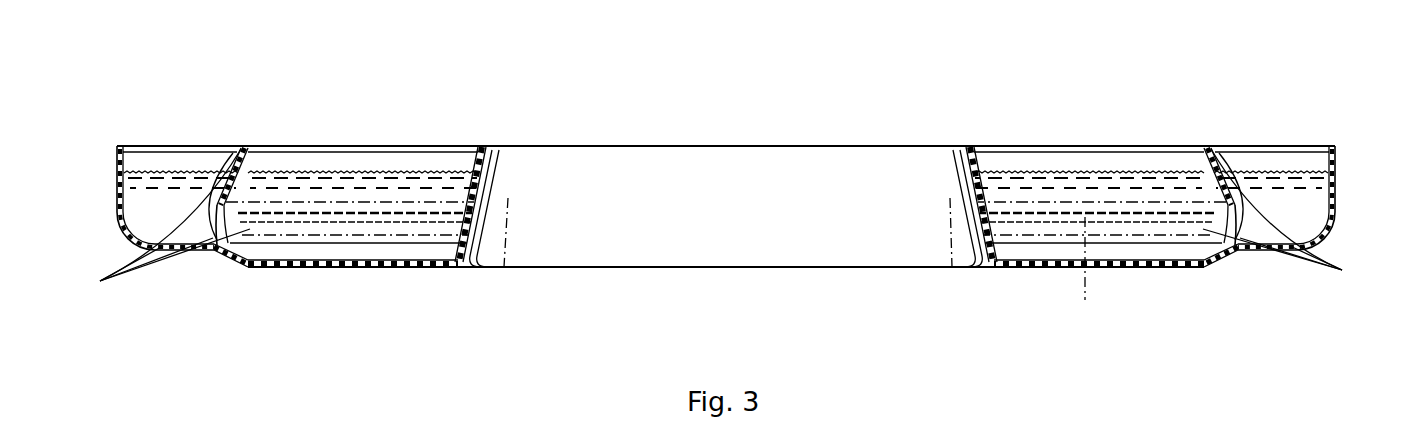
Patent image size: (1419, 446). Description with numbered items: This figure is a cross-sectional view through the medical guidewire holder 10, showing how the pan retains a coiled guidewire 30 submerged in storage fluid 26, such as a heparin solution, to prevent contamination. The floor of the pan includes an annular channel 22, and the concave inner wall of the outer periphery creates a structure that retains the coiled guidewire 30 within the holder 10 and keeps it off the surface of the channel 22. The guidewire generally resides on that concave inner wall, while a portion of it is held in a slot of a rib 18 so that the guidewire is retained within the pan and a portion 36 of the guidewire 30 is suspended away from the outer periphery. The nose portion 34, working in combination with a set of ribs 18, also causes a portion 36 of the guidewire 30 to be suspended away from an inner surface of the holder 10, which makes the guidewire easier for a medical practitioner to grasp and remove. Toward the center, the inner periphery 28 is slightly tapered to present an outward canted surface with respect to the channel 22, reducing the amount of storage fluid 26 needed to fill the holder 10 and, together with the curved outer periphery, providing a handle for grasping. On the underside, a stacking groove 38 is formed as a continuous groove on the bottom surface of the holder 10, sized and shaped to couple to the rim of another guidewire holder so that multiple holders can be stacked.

The medical guidewire holder 10 is at (1079, 103).
The rib 18 is at (190, 200).
The annular channel 22 is at (333, 257).
The storage fluid 26 is at (177, 170).
The inner periphery 28 is at (480, 177).
The guidewire 30 is at (1085, 300).
The nose portion 34 is at (117, 168).
The suspended portion of guidewire 36 is at (100, 281).
The stacking groove 38 is at (212, 256).